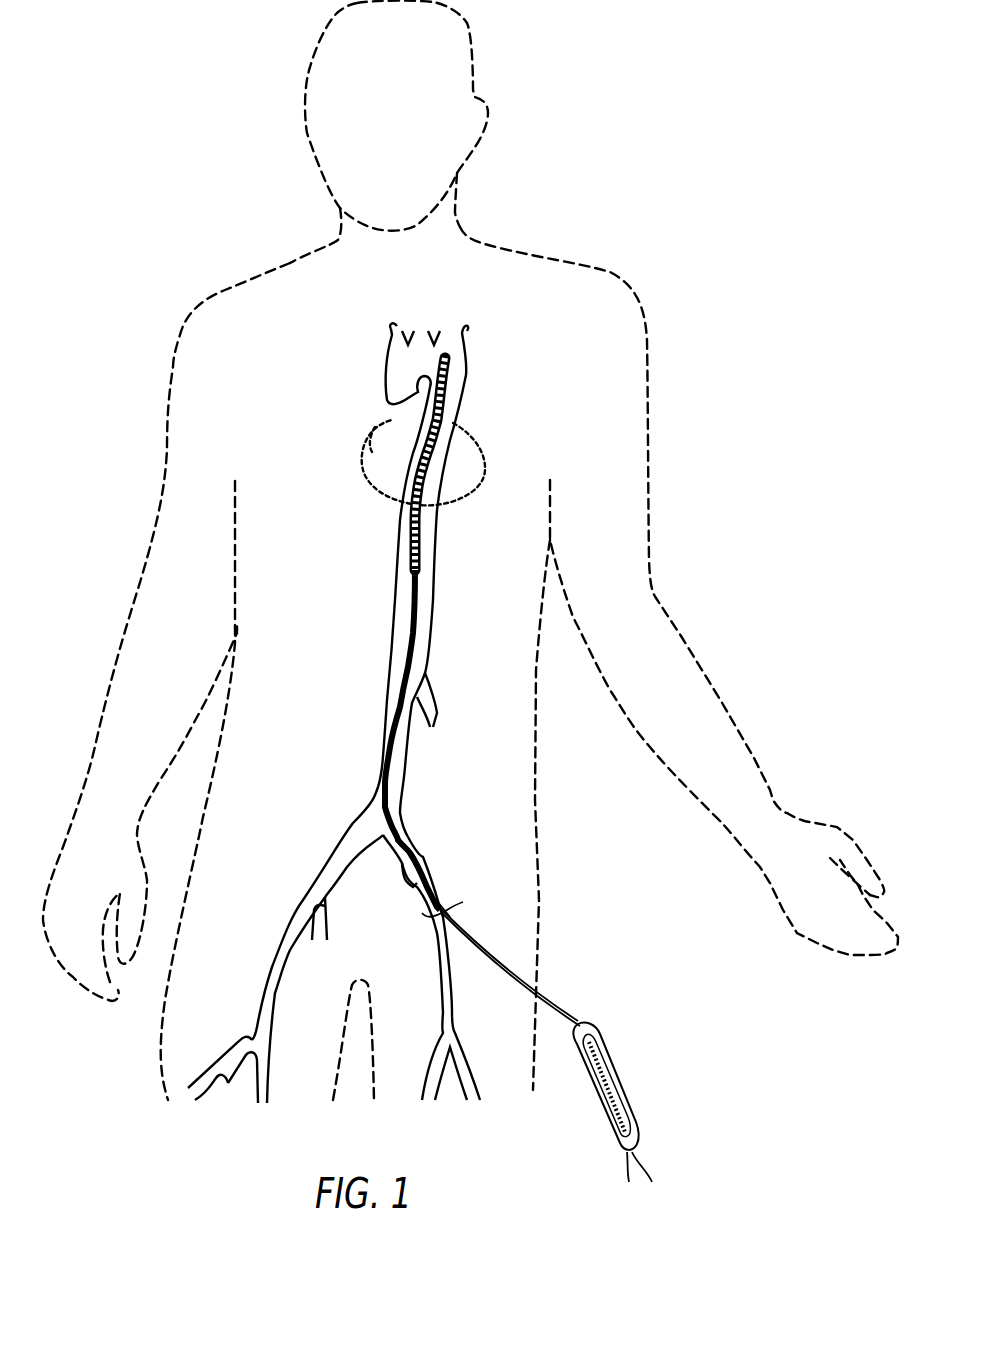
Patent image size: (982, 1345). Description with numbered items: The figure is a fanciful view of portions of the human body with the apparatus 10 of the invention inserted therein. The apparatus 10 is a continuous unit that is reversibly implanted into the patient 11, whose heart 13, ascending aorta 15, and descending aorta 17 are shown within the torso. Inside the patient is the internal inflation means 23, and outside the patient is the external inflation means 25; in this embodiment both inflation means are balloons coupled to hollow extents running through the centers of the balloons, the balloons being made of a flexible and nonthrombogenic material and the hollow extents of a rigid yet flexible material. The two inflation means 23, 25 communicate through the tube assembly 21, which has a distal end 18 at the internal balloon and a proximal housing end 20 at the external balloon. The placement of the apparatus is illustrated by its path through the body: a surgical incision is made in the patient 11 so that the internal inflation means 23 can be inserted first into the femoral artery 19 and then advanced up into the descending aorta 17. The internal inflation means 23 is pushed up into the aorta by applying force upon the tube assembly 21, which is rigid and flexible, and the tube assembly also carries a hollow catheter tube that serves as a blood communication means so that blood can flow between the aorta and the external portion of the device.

The apparatus 10 is at (484, 681).
The patient 11 is at (656, 320).
The heart 13 is at (476, 441).
The ascending aorta 15 is at (386, 380).
The descending aorta 17 is at (572, 464).
The distal end 18 is at (410, 586).
The femoral artery 19 is at (437, 867).
The proximal housing end 20 is at (580, 1020).
The tube assembly 21 is at (418, 650).
The internal inflation means 23 is at (454, 464).
The external inflation means 25 is at (630, 1071).